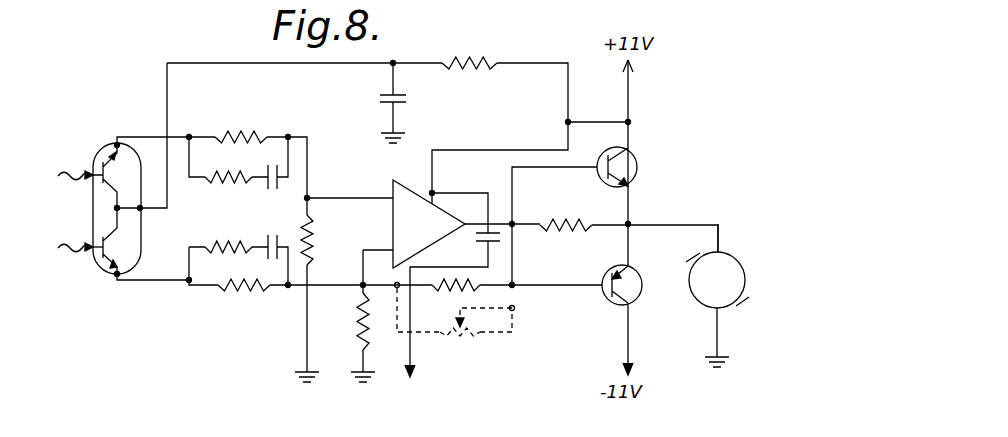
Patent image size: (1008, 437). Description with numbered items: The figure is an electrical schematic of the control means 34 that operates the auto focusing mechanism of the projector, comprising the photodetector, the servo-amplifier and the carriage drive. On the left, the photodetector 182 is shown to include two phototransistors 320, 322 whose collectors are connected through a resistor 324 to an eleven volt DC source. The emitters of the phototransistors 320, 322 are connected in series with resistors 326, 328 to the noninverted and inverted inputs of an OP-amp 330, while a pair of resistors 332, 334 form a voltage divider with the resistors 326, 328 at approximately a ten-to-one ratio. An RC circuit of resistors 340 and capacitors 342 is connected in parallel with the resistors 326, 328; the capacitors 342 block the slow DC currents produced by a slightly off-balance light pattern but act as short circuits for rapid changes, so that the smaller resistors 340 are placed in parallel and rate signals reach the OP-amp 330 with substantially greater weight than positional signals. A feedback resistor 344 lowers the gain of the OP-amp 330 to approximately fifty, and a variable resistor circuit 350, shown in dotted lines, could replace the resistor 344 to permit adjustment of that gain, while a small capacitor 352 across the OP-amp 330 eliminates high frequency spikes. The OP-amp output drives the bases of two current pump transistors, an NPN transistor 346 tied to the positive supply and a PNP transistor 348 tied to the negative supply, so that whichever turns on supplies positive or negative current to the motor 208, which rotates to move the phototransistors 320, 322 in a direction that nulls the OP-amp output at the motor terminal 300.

The control means 34 is at (126, 94).
The phototransistor 320 is at (108, 170).
The phototransistor 322 is at (118, 258).
The photodetector 182 is at (100, 266).
The resistor 326 is at (235, 130).
The resistor 328 is at (238, 292).
The resistor 340 is at (228, 243).
The capacitors 342 is at (268, 240).
The resistor 332 is at (312, 226).
The OP-amp 330 is at (410, 218).
The resistor 334 is at (358, 322).
The resistor 324 is at (478, 62).
The feedback resistor 344 is at (457, 292).
The variable resistor circuit 350 is at (515, 325).
The small capacitor 352 is at (494, 240).
The NPN transistor 346 is at (637, 158).
The PNP transistor 348 is at (637, 298).
The motor 208 is at (745, 254).
The motor lead 300 is at (758, 259).